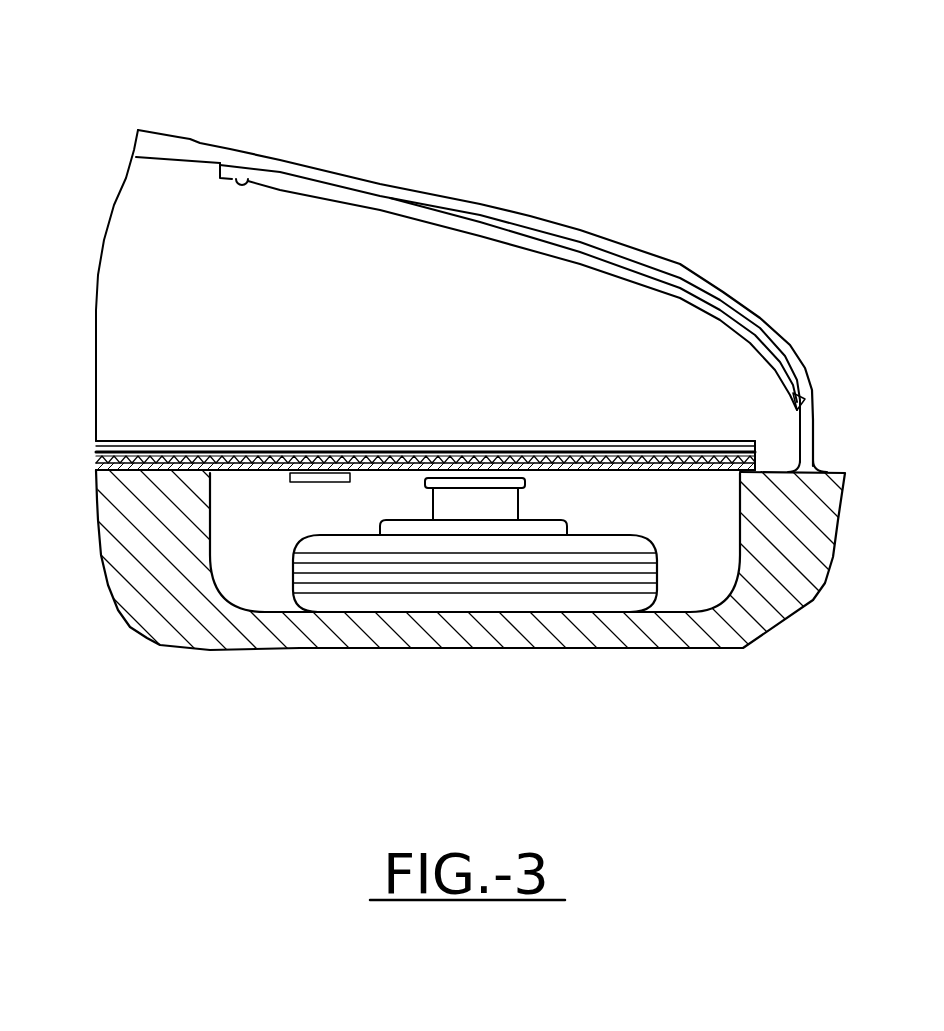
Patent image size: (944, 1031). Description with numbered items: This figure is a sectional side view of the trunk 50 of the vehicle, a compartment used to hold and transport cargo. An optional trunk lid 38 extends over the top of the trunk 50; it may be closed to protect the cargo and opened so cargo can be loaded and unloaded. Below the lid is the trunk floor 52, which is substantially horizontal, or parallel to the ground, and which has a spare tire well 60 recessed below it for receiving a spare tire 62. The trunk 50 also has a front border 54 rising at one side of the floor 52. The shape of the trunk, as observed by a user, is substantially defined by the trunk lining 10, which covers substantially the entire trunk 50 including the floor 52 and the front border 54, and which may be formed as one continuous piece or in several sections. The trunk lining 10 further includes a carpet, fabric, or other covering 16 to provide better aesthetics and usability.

The trunk lining 10 is at (410, 385).
The covering 16 is at (608, 441).
The trunk lid 38 is at (457, 197).
The trunk 50 is at (790, 178).
The trunk floor 52 is at (143, 467).
The front border 54 is at (172, 285).
The spare tire well 60 is at (268, 480).
The spare tire 62 is at (427, 597).